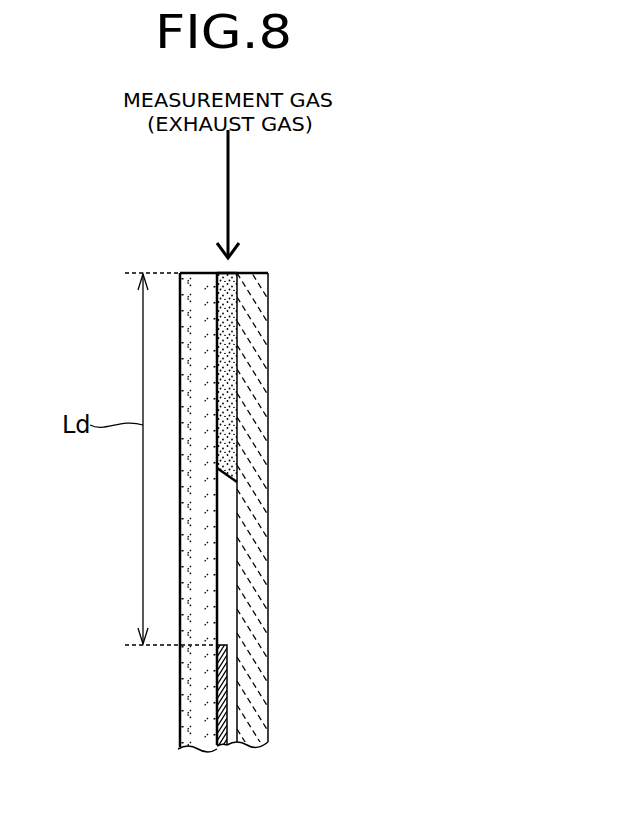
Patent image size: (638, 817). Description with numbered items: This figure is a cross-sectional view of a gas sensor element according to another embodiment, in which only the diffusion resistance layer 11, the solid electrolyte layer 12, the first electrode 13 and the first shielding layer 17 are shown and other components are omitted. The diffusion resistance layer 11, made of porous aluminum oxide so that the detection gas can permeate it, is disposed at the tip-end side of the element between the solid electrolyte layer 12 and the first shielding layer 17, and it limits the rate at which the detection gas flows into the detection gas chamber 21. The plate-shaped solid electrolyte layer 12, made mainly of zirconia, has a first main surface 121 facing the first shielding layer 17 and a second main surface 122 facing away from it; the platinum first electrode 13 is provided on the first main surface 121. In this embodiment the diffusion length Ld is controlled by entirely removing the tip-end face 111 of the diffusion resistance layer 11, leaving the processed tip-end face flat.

The diffusion resistance layer 11 is at (223, 330).
The tip-end face 111 is at (233, 272).
The solid electrolyte layer 12 is at (203, 272).
The first main surface 121 is at (218, 523).
The second main surface 122 is at (180, 702).
The first electrode 13 is at (222, 685).
The first shielding layer 17 is at (258, 390).
The detection gas chamber 21 is at (232, 585).